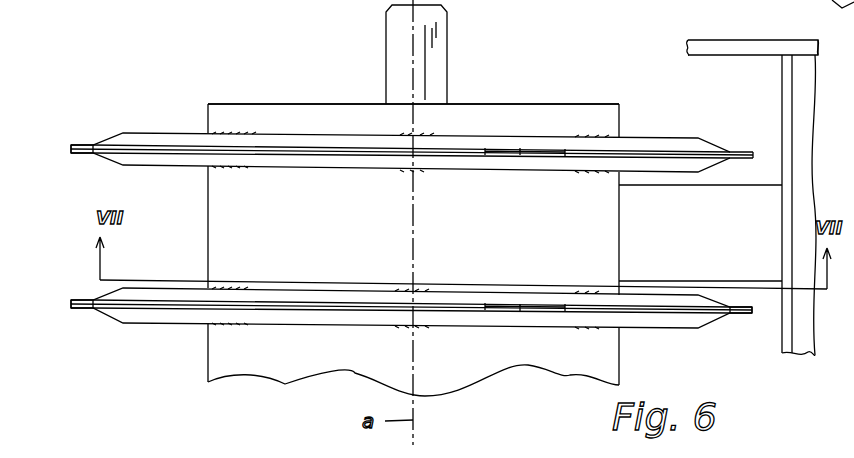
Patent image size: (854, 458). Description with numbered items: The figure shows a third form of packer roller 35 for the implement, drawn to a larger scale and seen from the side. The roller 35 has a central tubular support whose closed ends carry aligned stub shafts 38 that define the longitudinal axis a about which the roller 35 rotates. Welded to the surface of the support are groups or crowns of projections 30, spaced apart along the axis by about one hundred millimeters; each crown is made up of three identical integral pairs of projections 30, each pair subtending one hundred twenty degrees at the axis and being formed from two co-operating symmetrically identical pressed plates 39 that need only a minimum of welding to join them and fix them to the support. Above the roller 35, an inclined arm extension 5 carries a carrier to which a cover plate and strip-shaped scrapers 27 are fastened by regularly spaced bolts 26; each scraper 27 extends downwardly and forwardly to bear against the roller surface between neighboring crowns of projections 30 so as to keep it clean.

The extension 5 is at (728, 52).
The bolts 26 is at (243, 118).
The scraper 27 is at (642, 233).
The projections 30 is at (80, 145).
The packer roller 35 is at (255, 383).
The stub shaft 38 is at (388, 43).
The pressed plates 39 is at (160, 133).